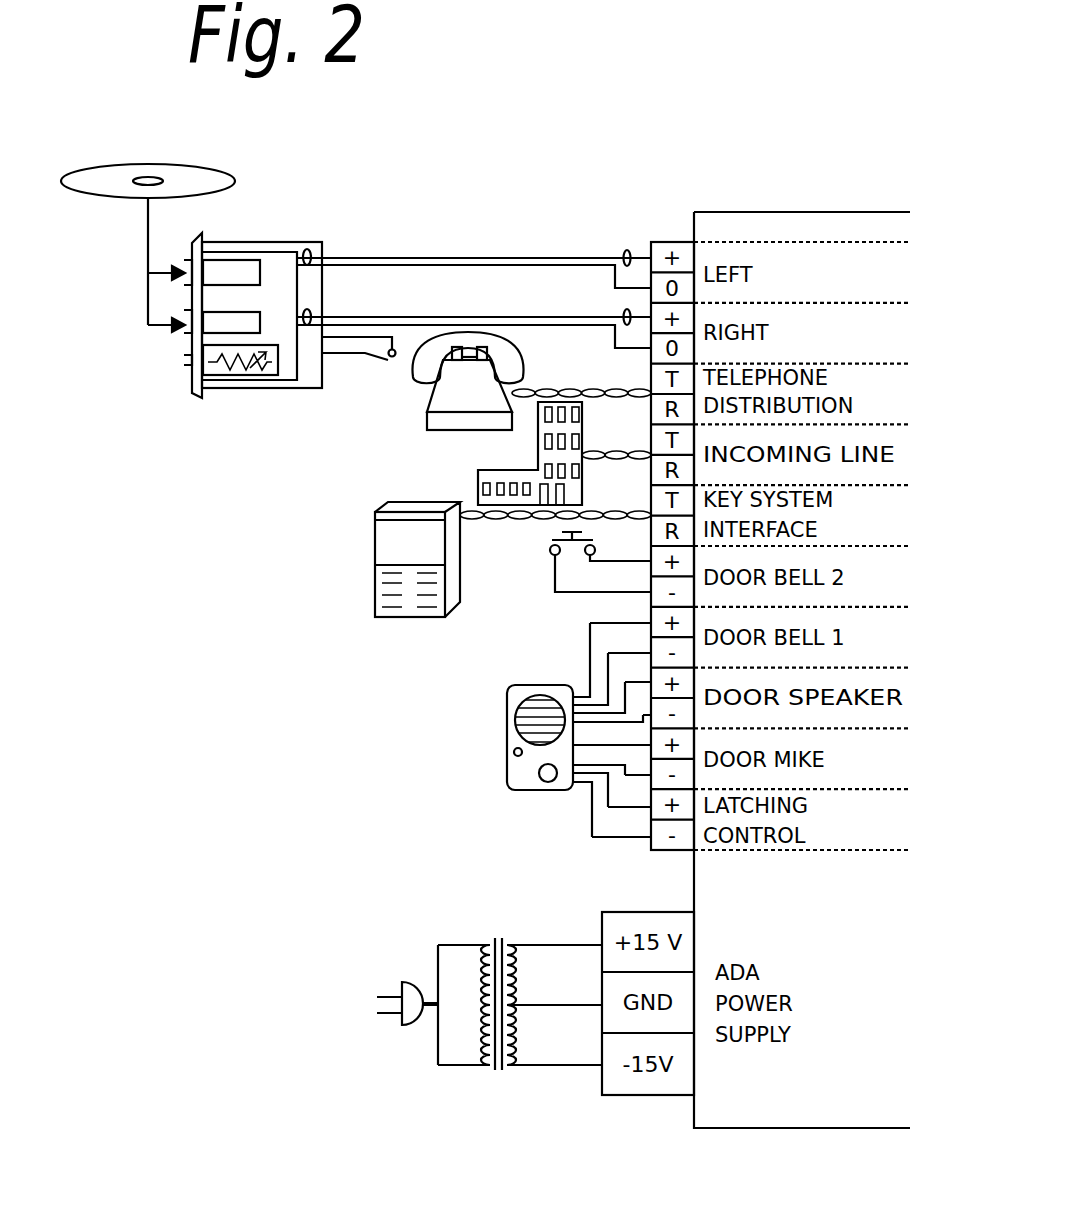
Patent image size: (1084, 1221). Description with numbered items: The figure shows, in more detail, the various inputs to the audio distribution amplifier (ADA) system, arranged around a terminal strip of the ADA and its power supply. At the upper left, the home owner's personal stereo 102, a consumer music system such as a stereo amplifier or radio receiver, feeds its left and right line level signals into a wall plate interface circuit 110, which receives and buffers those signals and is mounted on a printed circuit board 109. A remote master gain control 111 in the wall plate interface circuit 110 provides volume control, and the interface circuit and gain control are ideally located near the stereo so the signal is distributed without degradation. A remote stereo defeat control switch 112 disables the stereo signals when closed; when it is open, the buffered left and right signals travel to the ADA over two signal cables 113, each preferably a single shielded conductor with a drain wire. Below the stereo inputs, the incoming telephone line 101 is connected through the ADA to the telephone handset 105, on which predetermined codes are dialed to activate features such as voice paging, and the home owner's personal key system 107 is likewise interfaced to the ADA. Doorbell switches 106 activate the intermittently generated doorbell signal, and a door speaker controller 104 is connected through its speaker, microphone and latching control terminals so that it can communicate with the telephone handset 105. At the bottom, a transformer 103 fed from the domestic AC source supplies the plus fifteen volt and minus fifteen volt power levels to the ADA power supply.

The incoming telephone line 101 is at (478, 473).
The personal stereo 102 is at (102, 167).
The transformer 103 is at (499, 1086).
The door speaker controller 104 is at (507, 730).
The telephone handset 105 is at (425, 385).
The doorbell switches 106 is at (589, 655).
The key system 107 is at (375, 565).
The printed circuit board 109 is at (275, 270).
The wall plate interface circuit 110 is at (238, 247).
The remote master gain control 111 is at (260, 367).
The remote stereo defeat control switch 112 is at (387, 362).
The signal cables 113 is at (398, 315).